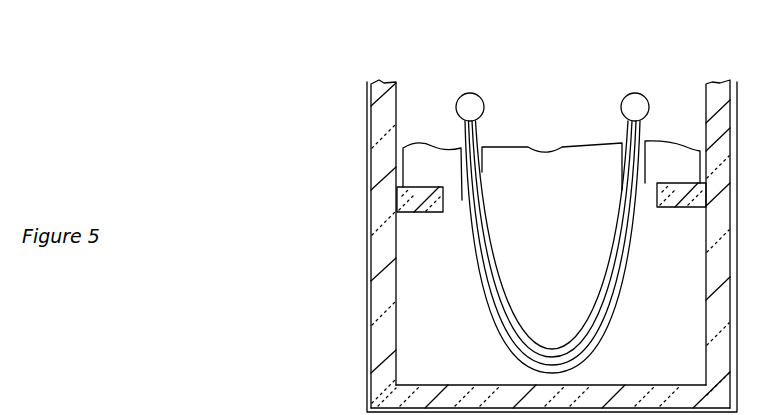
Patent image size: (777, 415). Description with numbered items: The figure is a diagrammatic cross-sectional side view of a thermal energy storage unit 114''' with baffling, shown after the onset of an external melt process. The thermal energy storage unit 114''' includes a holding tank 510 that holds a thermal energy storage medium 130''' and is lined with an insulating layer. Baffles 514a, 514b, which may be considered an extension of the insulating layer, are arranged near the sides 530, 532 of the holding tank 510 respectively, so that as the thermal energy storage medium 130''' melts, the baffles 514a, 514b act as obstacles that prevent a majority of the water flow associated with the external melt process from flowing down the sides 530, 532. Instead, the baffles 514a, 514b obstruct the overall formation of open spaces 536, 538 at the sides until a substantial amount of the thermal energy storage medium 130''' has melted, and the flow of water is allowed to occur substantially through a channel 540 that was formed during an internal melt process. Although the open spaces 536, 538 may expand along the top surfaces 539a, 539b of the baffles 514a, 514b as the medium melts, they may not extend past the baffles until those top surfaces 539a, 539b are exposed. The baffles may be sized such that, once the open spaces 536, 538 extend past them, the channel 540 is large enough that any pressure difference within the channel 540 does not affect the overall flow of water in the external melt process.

The thermal energy storage unit 114''' is at (496, 230).
The holding tank 510 is at (366, 297).
The side 530 is at (396, 90).
The side 532 is at (703, 87).
The open space 536 is at (402, 146).
The open space 538 is at (702, 147).
The top surface of baffle 539a is at (424, 187).
The top surface of baffle 539b is at (673, 183).
The channel 540 is at (477, 147).
The baffle 514a is at (404, 213).
The baffle 514b is at (700, 208).
The thermal energy storage medium 130''' is at (650, 350).